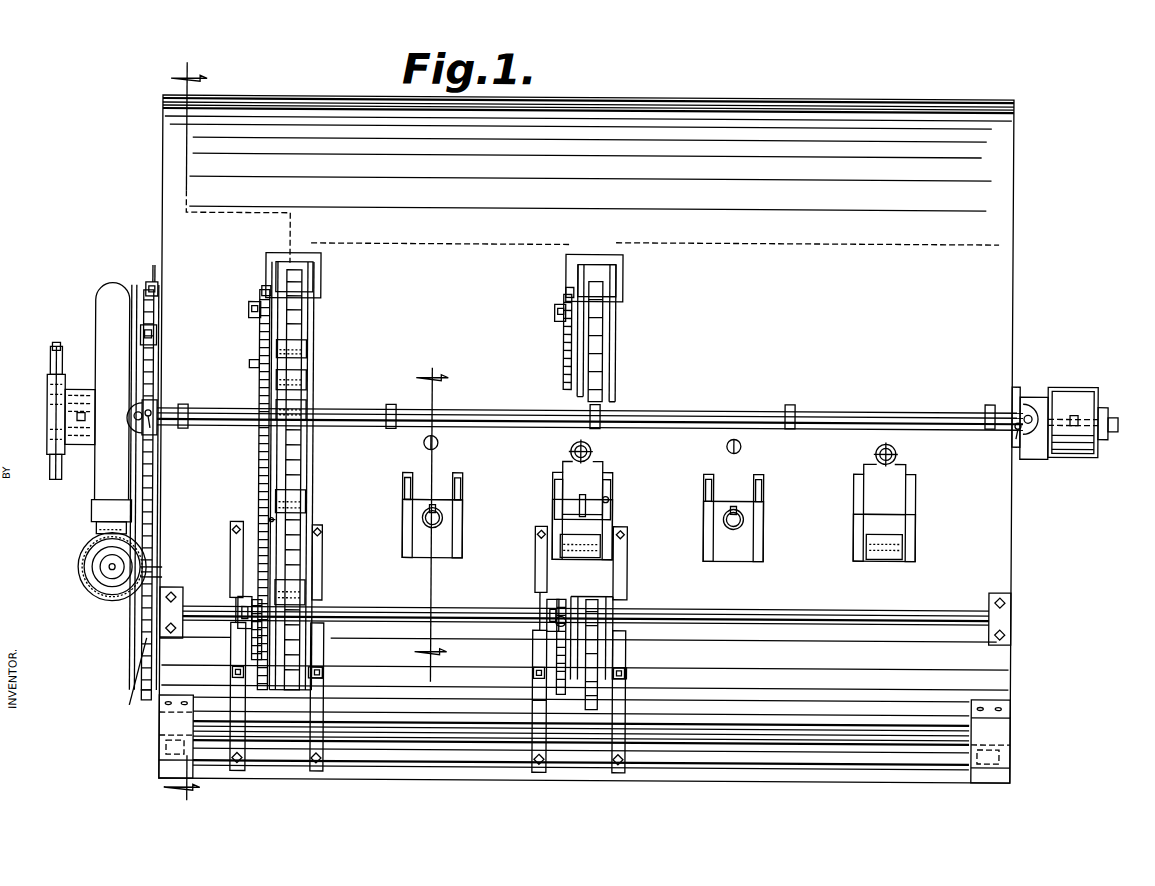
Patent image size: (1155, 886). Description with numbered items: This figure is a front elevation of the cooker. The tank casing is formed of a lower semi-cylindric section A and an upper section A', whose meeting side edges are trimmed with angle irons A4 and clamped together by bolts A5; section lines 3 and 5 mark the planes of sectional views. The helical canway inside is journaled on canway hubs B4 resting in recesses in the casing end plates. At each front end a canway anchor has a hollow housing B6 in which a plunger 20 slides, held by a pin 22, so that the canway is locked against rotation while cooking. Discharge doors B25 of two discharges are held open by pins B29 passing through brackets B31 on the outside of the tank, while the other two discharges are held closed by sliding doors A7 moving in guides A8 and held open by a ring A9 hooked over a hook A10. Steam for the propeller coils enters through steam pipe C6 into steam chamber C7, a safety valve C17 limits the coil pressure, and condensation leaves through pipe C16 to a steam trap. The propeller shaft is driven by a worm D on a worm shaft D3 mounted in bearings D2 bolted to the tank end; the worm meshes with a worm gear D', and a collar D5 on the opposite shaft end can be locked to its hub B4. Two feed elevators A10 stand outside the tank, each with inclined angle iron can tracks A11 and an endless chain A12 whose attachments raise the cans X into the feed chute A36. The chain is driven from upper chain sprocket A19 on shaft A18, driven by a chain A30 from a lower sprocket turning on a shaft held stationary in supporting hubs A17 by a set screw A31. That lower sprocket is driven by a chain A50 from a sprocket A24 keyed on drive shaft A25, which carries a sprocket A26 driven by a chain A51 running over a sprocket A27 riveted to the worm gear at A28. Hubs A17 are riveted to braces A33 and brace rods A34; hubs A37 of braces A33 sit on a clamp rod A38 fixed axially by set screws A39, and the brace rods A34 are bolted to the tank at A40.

The lower semi-cylindric casing section A is at (602, 439).
The upper semi-cylindric casing section A' is at (588, 164).
The section line 3 is at (186, 432).
The section line 5 is at (431, 522).
The angle irons A4 is at (694, 410).
The bolts A5 is at (797, 402).
The sliding doors A7 is at (423, 558).
The guides A8 is at (400, 487).
The ring A9 is at (573, 447).
The feed elevator A10 is at (322, 329).
The inclined angle iron can tracks A11 is at (309, 464).
The endless chain A12 is at (325, 551).
The supporting hubs A17 is at (332, 669).
The shaft A18 is at (250, 309).
The upper chain sprocket A19 is at (255, 287).
The sprocket A24 is at (246, 595).
The drive shaft A25 is at (795, 606).
The sprocket A26 is at (126, 671).
The sprocket A27 is at (154, 282).
The rivets A28 is at (247, 362).
The chain A30 is at (256, 467).
The set screw A31 is at (236, 671).
The braces A33 is at (540, 729).
The brace rods A34 is at (235, 554).
The feed chute A36 is at (307, 272).
The hubs A37 is at (247, 777).
The clamp rod A38 is at (831, 763).
The set screws A39 is at (322, 772).
The bolting point A40 is at (408, 520).
The chain A50 is at (253, 642).
The chain A51 is at (265, 519).
The canway hubs B4 is at (139, 440).
The hollow housing B6 is at (164, 400).
The discharge doors B25 is at (603, 509).
The pins B29 is at (598, 491).
The brackets B31 is at (556, 490).
The steam pipe C6 is at (47, 459).
The steam chamber C7 is at (53, 406).
The pipe C16 is at (1116, 429).
The safety valve C17 is at (52, 350).
The worm D is at (120, 598).
The worm gear D' is at (111, 402).
The bearings D2 is at (101, 550).
The worm shaft D3 is at (115, 575).
The collar D5 is at (1088, 395).
The cans X is at (305, 346).
The plunger 20 is at (135, 408).
The pin 22 is at (154, 420).